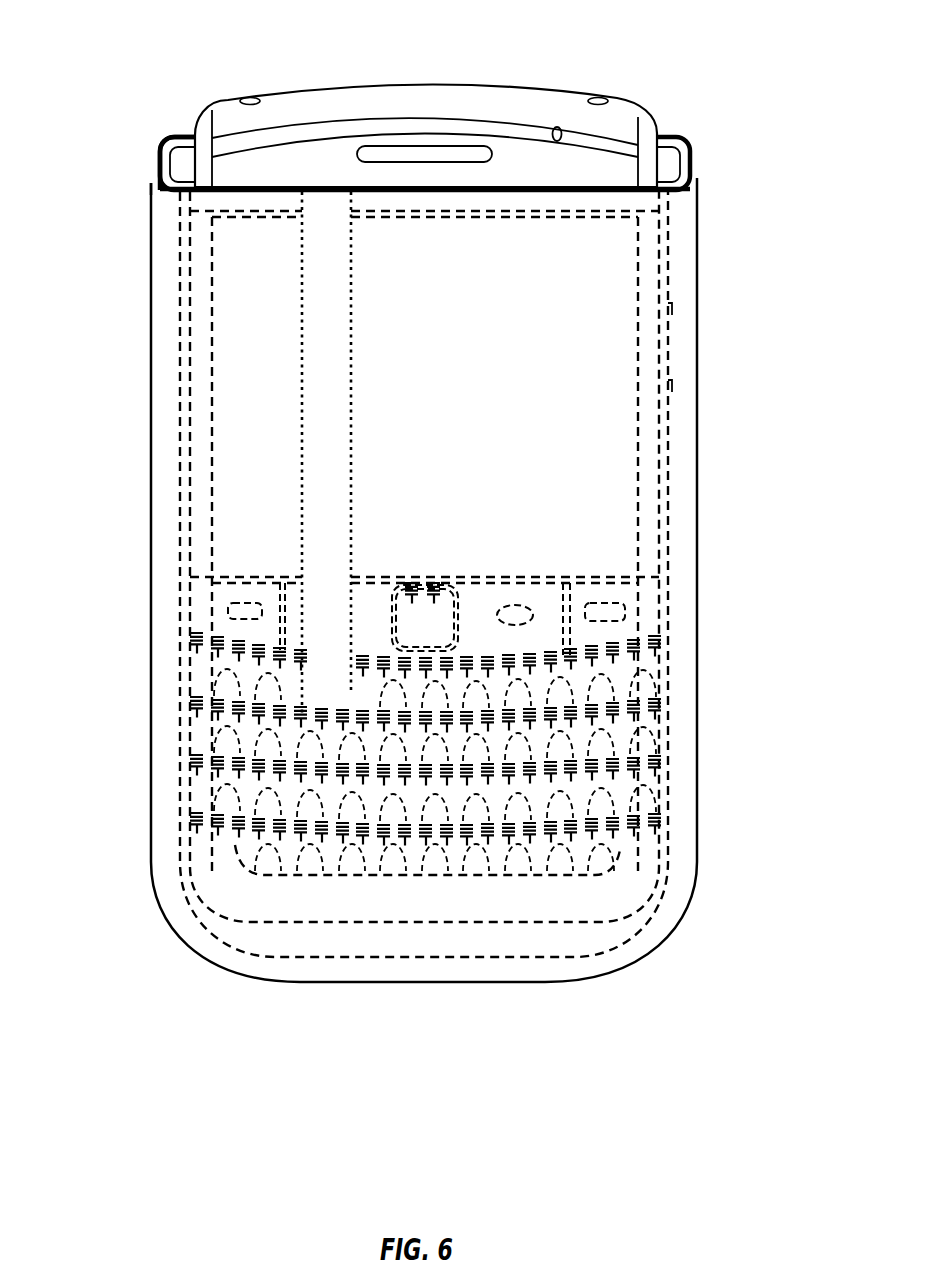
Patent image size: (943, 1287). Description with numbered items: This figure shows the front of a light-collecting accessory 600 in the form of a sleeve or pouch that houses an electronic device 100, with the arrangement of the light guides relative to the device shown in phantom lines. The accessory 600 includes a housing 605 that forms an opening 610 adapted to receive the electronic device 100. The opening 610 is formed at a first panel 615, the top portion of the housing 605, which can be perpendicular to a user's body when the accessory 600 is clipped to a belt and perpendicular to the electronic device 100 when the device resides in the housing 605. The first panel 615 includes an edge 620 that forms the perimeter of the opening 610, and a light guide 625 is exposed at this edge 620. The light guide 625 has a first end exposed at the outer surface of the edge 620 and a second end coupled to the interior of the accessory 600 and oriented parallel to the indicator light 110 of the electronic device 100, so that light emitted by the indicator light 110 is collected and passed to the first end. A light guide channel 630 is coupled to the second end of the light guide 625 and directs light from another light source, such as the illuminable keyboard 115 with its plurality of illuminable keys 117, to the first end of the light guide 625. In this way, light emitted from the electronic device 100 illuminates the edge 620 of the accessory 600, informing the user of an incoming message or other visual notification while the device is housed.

The electronic device 100 is at (338, 107).
The indicator light 110 is at (561, 126).
The keyboard 115 is at (464, 859).
The keys 117 is at (588, 738).
The accessory 600 is at (682, 474).
The housing 605 is at (151, 457).
The opening 610 is at (672, 167).
The first panel 615 is at (699, 171).
The edge 620 is at (167, 140).
The light guide 625 is at (154, 182).
The light guide channel 630 is at (318, 445).